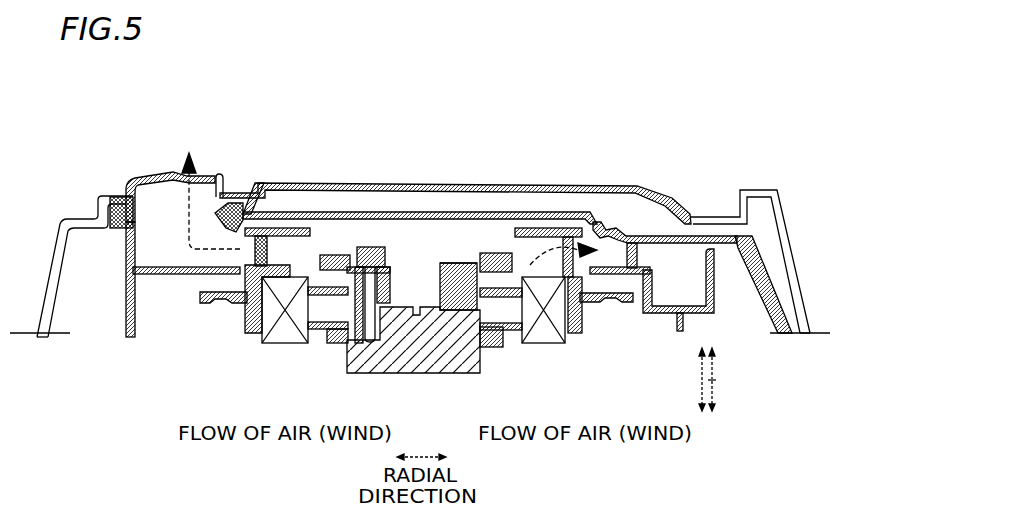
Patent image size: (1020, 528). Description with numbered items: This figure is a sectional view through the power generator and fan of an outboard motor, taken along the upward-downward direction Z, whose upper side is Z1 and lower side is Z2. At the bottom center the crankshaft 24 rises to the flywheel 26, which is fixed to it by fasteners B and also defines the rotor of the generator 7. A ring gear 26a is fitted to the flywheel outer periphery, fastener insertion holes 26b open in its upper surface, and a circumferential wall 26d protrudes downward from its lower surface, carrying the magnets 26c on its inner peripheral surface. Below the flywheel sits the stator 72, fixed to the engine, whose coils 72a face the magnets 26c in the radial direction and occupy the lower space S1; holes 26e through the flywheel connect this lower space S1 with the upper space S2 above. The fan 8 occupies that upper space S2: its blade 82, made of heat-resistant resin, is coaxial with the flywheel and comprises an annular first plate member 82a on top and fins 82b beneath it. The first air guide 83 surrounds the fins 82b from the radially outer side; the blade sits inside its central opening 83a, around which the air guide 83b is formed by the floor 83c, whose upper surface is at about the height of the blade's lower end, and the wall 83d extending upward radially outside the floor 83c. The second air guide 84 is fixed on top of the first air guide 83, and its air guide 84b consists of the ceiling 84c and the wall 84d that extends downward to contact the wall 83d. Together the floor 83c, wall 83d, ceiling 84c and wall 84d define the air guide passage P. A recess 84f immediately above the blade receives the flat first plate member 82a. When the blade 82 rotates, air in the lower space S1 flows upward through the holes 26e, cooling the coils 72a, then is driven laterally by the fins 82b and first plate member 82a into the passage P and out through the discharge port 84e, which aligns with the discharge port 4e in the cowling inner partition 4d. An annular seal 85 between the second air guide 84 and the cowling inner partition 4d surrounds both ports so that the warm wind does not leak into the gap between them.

The cowling inner partition 4d is at (763, 188).
The discharge port 4e is at (214, 186).
The generator 7 is at (564, 347).
The fan 8 is at (764, 242).
The crankshaft 24 is at (423, 375).
The flywheel 26 is at (470, 262).
The ring gear 26a is at (203, 305).
The fastener insertion holes 26b is at (363, 345).
The magnets 26c is at (267, 227).
The circumferential wall 26d is at (265, 345).
The holes 26e is at (314, 253).
The stator 72 is at (327, 345).
The coils 72a is at (292, 345).
The blade 82 is at (290, 228).
The first plate member 82a is at (302, 212).
The fins 82b is at (252, 262).
The first air guide 83 is at (678, 312).
The opening 83a is at (242, 265).
The air guide 83b is at (188, 125).
The floor 83c is at (167, 265).
The wall 83d is at (128, 218).
The second air guide 84 is at (640, 236).
The air guide 84b is at (644, 124).
The ceiling 84c is at (592, 226).
The wall 84d is at (610, 228).
The discharge port 84e is at (214, 210).
The recess 84f is at (422, 218).
The annular seal 85 is at (112, 193).
The fasteners B is at (370, 245).
The air guide passage P is at (610, 304).
The lower space S1 is at (503, 308).
The upper space S2 is at (521, 228).
The direction Z is at (695, 379).
The upper side Z1 is at (724, 364).
The lower side Z2 is at (724, 396).